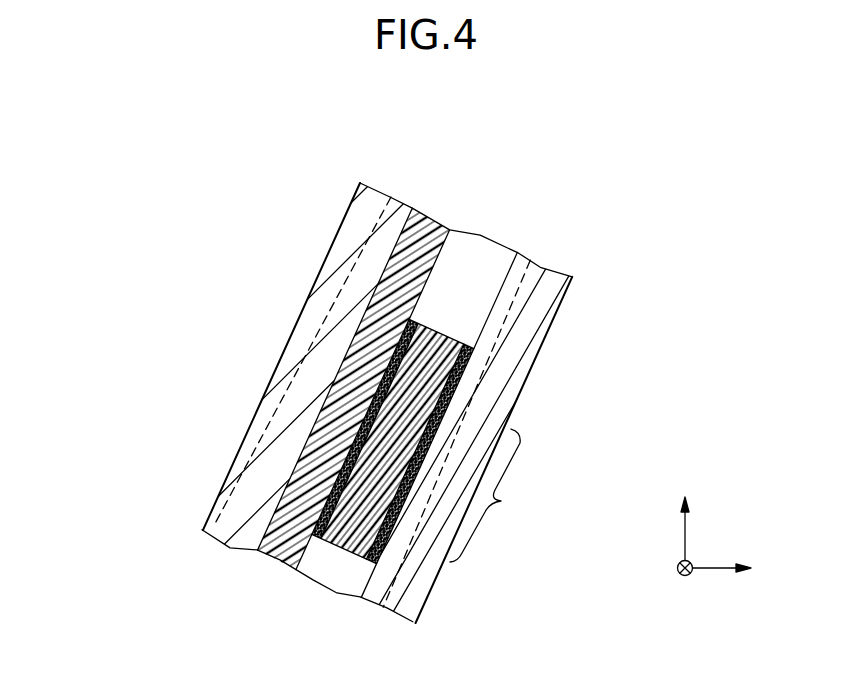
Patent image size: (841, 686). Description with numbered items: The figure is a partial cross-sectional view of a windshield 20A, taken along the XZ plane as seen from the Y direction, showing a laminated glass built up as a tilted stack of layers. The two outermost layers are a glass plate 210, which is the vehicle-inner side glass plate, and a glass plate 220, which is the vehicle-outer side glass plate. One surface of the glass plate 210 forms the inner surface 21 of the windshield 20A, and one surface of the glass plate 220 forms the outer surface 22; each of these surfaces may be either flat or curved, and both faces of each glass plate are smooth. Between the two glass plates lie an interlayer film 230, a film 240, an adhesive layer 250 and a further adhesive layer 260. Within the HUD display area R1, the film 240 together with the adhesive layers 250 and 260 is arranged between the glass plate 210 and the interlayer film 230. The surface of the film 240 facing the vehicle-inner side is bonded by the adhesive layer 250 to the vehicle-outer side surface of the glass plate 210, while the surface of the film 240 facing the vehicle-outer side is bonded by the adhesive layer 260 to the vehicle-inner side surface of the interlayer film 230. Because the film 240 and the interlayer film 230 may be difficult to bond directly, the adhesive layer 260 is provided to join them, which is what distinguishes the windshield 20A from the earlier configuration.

The windshield 20A is at (93, 222).
The inner surface 21 is at (536, 351).
The outer surface 22 is at (332, 253).
The glass plate 210 is at (545, 278).
The glass plate 220 is at (385, 213).
The interlayer film 230 is at (440, 233).
The film 240 is at (364, 428).
The adhesive layer 250 is at (352, 484).
The adhesive layer 260 is at (390, 513).
The HUD display area R1 is at (494, 495).